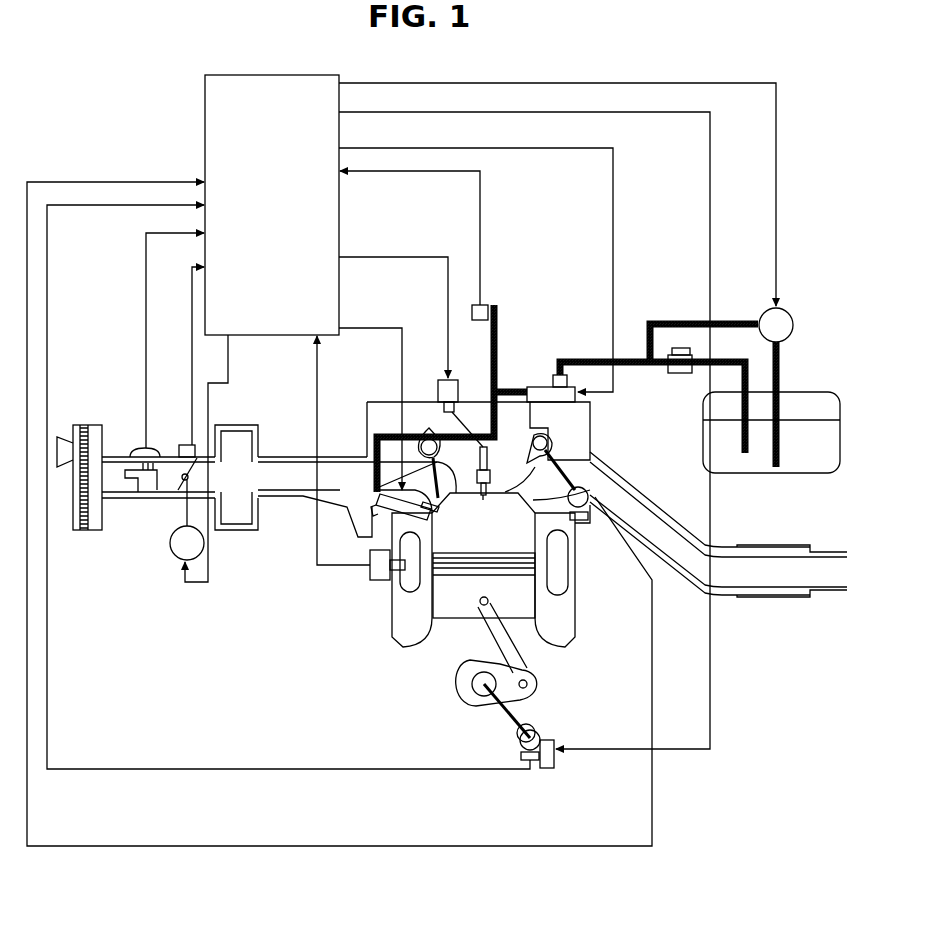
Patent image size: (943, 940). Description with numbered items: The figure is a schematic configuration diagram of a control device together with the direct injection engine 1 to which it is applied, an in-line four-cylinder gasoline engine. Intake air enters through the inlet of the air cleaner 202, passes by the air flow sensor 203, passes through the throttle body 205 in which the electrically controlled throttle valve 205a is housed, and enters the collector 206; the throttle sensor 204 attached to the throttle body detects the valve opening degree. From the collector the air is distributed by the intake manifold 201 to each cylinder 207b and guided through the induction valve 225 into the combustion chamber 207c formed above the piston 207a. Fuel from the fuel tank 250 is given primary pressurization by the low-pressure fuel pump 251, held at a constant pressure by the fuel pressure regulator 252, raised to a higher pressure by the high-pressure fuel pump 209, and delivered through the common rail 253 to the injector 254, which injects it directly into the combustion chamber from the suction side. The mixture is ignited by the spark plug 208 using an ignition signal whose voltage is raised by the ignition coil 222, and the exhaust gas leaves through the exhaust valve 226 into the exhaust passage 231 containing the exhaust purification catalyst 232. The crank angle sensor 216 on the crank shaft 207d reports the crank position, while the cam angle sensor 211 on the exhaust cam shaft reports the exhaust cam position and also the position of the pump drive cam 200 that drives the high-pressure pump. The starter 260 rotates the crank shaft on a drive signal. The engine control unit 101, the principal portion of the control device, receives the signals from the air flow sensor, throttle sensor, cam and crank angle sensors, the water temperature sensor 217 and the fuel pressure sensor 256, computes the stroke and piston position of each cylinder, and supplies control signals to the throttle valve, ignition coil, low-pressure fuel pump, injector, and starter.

The direct injection engine 1 is at (376, 421).
The engine control unit 101 is at (205, 124).
The pump drive cam 200 is at (566, 447).
The intake manifold 201 is at (275, 500).
The air cleaner 202 is at (82, 532).
The air flow sensor 203 is at (138, 448).
The throttle sensor 204 is at (183, 445).
The throttle body 205 is at (157, 495).
The electrically controlled throttle valve 205a is at (188, 478).
The collector 206 is at (228, 530).
The piston 207a is at (453, 607).
The cylinder 207b is at (558, 612).
The combustion chamber 207c is at (568, 582).
The crank shaft 207d is at (478, 687).
The spark plug 208 is at (486, 500).
The high-pressure fuel pump 209 is at (561, 377).
The cam angle sensor 211 is at (593, 478).
The crank angle sensor 216 is at (541, 740).
The water temperature sensor 217 is at (370, 578).
The ignition coil 222 is at (440, 396).
The induction valve 225 is at (372, 494).
The exhaust valve 226 is at (565, 520).
The exhaust passage 231 is at (648, 511).
The exhaust purification catalyst 232 is at (777, 590).
The fuel tank 250 is at (797, 392).
The low-pressure fuel pump 251 is at (793, 327).
The fuel pressure regulator 252 is at (675, 374).
The common rail 253 is at (496, 390).
The injector 254 is at (438, 505).
The fuel pressure sensor 256 is at (488, 310).
The starter 260 is at (556, 767).